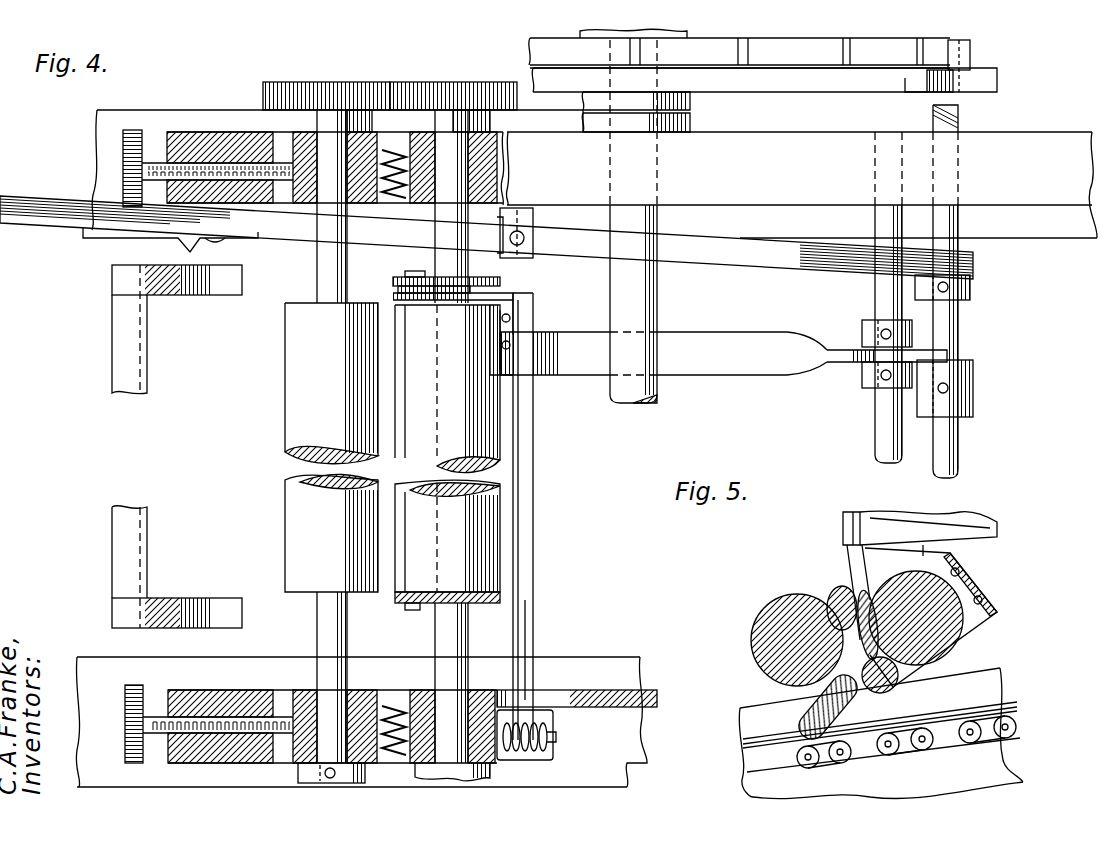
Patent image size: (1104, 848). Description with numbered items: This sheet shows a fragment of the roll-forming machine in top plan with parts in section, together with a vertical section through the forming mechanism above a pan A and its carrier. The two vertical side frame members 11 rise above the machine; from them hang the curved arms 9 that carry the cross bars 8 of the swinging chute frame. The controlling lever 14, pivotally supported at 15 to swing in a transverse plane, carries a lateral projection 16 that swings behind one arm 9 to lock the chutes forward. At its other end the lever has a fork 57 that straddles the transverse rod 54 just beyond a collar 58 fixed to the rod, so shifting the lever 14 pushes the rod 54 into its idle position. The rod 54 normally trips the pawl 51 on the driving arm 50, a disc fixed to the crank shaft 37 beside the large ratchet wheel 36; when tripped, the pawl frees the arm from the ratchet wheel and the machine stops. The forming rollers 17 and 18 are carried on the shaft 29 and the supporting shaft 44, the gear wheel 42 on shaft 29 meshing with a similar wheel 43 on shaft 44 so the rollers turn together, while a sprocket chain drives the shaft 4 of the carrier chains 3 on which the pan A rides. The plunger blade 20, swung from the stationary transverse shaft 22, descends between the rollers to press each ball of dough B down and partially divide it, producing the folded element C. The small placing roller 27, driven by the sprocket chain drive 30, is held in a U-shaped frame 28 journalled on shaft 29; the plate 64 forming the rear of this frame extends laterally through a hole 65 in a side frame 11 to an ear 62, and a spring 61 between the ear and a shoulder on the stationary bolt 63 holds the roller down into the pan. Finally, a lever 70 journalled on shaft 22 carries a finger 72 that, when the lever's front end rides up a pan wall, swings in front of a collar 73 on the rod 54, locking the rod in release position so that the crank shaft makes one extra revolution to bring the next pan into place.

In FIG. 5, the endless chains 3 is at (948, 752).
In FIG. 4, the shaft 4 is at (0, 207).
In FIG. 4, the cross bars 8 is at (133, 550).
In FIG. 4, the arms 9 is at (167, 297).
In FIG. 4, the vertical side frame members 11 is at (610, 686).
In FIG. 4, the controlling lever 14 is at (390, 231).
In FIG. 4, the pivotal support 15 is at (537, 253).
In FIG. 4, the lateral projection 16 is at (178, 238).
In FIG. 4, the forming roller 17 is at (447, 448).
In FIG. 5, the forming roller 17 is at (975, 640).
In FIG. 4, the forming roller 18 is at (331, 447).
In FIG. 5, the forming roller 18 is at (760, 635).
In FIG. 5, the blade 20 is at (843, 540).
In FIG. 4, the stationary transverse shaft 22 is at (883, 420).
In FIG. 4, the placing roller 27 is at (397, 305).
In FIG. 5, the placing roller 27 is at (900, 688).
In FIG. 4, the U-shaped frame 28 is at (503, 297).
In FIG. 5, the U-shaped frame 28 is at (985, 582).
In FIG. 4, the shaft 29 is at (463, 263).
In FIG. 4, the sprocket chain drive 30 is at (432, 275).
In FIG. 4, the ratchet wheel 36 is at (739, 48).
In FIG. 4, the crank shaft 37 is at (650, 300).
In FIG. 4, the gear wheel 42 is at (458, 85).
In FIG. 4, the gear wheel 43 is at (368, 83).
In FIG. 4, the supporting shaft 44 is at (322, 265).
In FIG. 4, the driving arm 50 is at (773, 78).
In FIG. 4, the pawl 51 is at (970, 52).
In FIG. 4, the rod 54 is at (950, 320).
In FIG. 4, the fork 57 is at (975, 258).
In FIG. 4, the collar 58 is at (972, 287).
In FIG. 4, the spring 61 is at (552, 692).
In FIG. 4, the ear 62 is at (543, 750).
In FIG. 4, the stationary bolt 63 is at (557, 723).
In FIG. 4, the bar or plate 64 is at (536, 627).
In FIG. 4, the hole 65 is at (535, 690).
In FIG. 4, the lever 70 is at (766, 371).
In FIG. 4, the finger 72 is at (957, 352).
In FIG. 4, the collar 73 is at (975, 395).
In FIG. 5, the baking pan A is at (1007, 693).
In FIG. 5, the ball of dough B is at (830, 600).
In FIG. 5, the folded element C is at (805, 698).